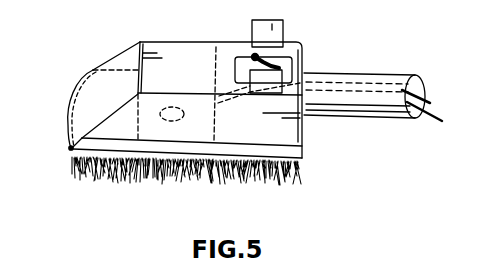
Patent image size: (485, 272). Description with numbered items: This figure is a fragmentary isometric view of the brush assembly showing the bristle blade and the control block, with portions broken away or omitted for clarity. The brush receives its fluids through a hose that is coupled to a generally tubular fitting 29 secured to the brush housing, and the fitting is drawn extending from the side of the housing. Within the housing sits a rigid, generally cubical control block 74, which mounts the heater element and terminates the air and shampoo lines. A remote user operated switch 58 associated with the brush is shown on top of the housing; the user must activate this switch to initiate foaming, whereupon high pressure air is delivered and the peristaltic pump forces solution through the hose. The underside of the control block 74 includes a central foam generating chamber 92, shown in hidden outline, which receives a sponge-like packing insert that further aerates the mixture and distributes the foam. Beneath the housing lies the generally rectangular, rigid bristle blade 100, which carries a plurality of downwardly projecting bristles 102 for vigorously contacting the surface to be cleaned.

The control block 74 is at (205, 50).
The remote user operated switch 58 is at (255, 57).
The tubular fitting 29 is at (316, 73).
The foam generating chamber 92 is at (160, 118).
The bristle blade 100 is at (298, 155).
The bristles 102 is at (145, 175).